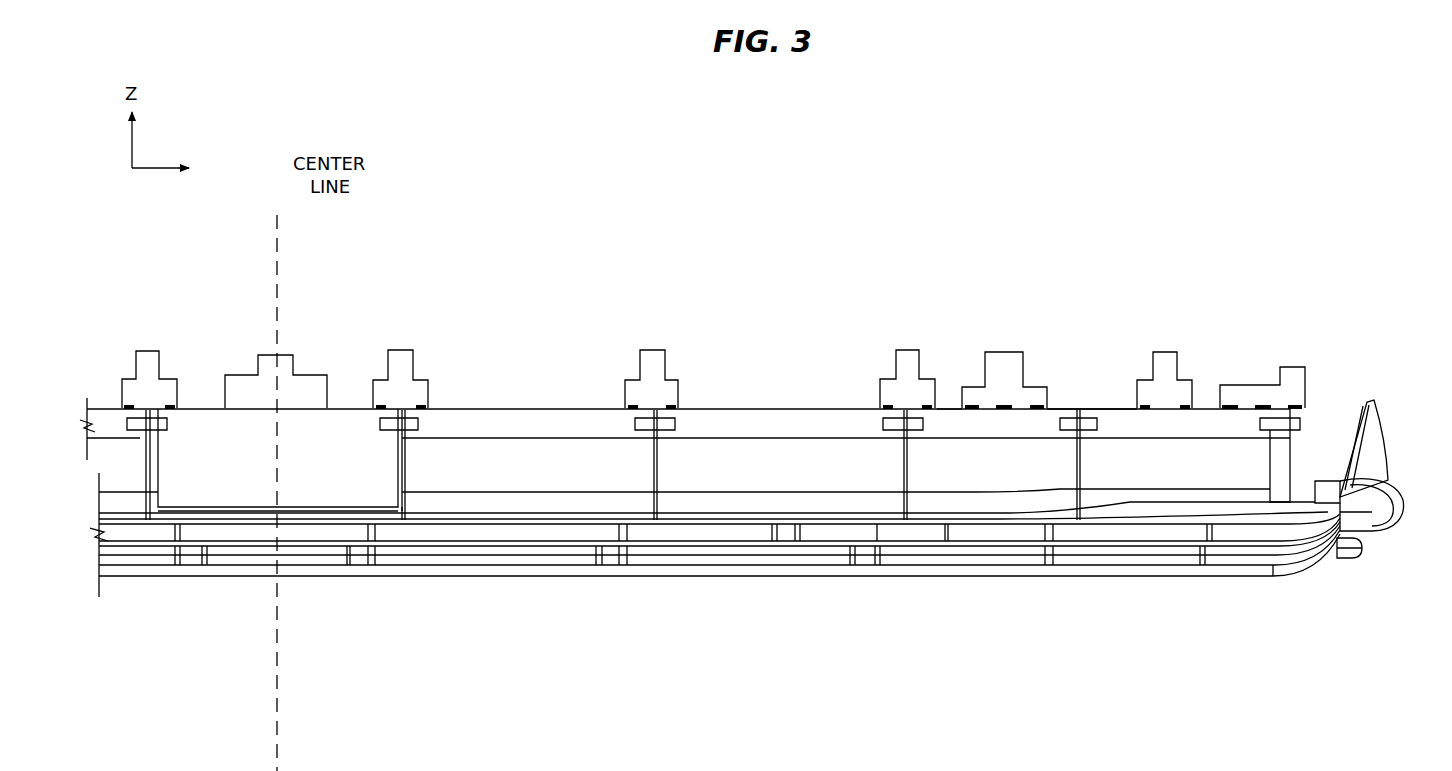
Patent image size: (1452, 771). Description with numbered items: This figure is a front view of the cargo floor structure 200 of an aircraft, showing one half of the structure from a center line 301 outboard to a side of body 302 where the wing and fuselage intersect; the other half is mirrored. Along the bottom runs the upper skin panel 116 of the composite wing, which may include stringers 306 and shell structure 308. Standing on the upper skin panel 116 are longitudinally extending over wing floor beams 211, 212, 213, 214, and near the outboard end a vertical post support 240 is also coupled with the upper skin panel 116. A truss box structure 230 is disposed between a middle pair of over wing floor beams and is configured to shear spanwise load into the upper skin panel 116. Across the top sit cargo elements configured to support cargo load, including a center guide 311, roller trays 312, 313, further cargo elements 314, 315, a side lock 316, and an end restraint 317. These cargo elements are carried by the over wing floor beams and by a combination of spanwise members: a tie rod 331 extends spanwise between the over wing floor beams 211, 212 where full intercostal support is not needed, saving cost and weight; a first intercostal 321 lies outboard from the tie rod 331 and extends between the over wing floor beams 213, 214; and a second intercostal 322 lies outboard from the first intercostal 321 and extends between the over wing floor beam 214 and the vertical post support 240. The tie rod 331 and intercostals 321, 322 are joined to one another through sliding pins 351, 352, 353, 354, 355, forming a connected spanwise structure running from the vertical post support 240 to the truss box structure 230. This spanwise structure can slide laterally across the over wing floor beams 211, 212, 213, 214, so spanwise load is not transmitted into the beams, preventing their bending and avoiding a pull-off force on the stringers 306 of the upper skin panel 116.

The upper skin panel 116 is at (682, 588).
The cargo floor structure 200 is at (580, 180).
The over wing floor beam 211 is at (406, 462).
The over wing floor beam 212 is at (658, 462).
The over wing floor beam 213 is at (908, 462).
The over wing floor beam 214 is at (1081, 462).
The truss box structure 230 is at (215, 440).
The vertical post support 240 is at (1296, 460).
The center line 301 is at (282, 252).
The side of body 302 is at (1375, 395).
The stringers 306 is at (1288, 567).
The shell structure 308 is at (1328, 526).
The center guide 311 is at (315, 375).
The roller tray 312 is at (416, 347).
The roller tray 313 is at (666, 345).
The cargo element 314 is at (890, 349).
The cargo element 315 is at (1179, 349).
The side lock 316 is at (1029, 371).
The end restraint 317 is at (1289, 360).
The first intercostal 321 is at (955, 410).
The second intercostal 322 is at (1112, 410).
The tie rod 331 is at (527, 426).
The sliding pin 351 is at (421, 424).
The sliding pin 352 is at (678, 422).
The sliding pin 353 is at (879, 422).
The sliding pin 354 is at (1057, 425).
The sliding pin 355 is at (1257, 424).